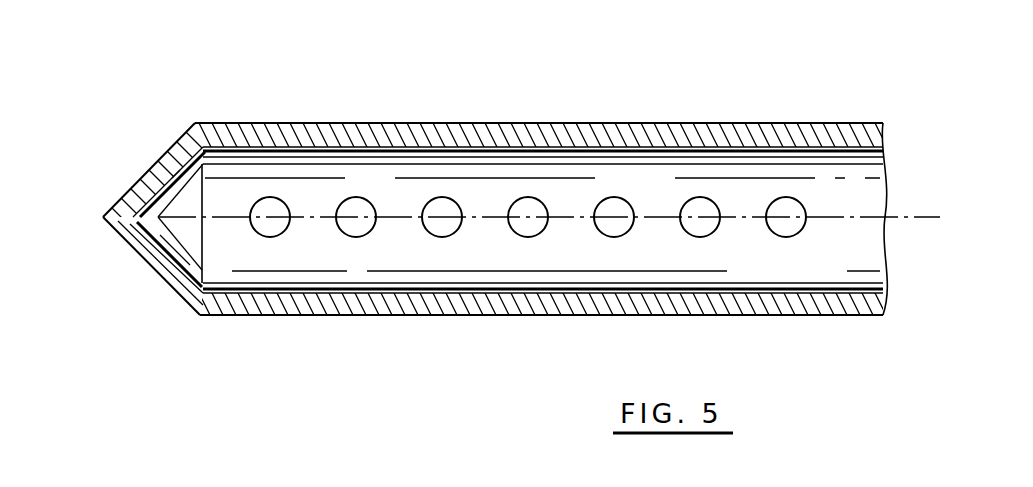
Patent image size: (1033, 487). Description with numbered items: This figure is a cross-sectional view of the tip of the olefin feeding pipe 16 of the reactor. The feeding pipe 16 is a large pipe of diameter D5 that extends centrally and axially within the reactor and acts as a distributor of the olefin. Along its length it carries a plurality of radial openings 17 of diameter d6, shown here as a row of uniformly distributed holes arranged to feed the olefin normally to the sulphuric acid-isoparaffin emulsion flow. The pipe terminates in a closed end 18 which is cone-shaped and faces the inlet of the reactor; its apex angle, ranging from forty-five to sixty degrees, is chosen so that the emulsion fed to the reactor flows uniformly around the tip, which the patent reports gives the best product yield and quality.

The feeding pipe 16 is at (441, 321).
The radial openings 17 is at (611, 203).
The closed end 18 is at (171, 145).
The diameter of the feeding pipe D5 is at (273, 385).
The diameter of the radial openings d6 is at (310, 263).